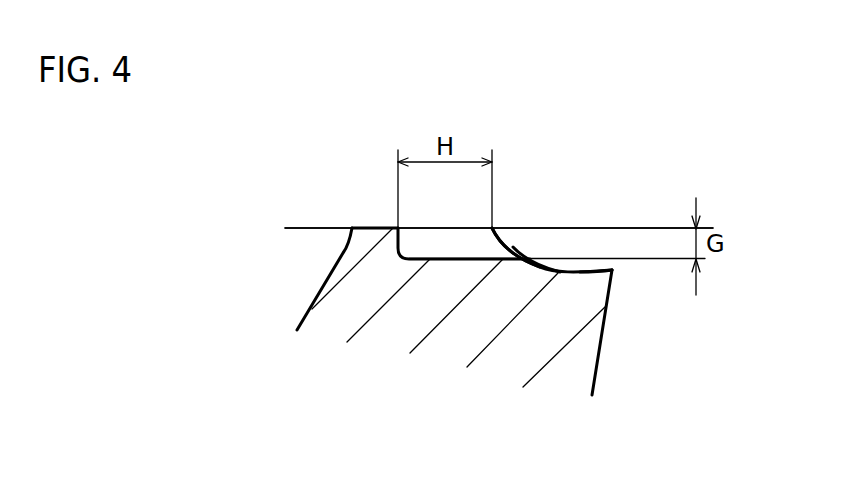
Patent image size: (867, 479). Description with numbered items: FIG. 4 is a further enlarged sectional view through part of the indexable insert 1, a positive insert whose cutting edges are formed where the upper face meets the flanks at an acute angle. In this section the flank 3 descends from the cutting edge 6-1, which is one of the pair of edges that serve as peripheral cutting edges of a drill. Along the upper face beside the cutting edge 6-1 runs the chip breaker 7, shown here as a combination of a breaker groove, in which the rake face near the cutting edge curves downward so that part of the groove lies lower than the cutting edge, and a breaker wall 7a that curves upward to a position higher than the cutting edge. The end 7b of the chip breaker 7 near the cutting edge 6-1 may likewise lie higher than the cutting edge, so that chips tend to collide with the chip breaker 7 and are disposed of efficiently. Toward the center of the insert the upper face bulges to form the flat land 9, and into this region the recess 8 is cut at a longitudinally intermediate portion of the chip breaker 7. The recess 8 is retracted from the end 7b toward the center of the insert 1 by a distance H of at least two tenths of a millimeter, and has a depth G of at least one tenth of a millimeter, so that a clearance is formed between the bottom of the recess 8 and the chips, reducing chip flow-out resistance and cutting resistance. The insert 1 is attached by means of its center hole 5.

The indexable insert 1 is at (383, 186).
The flank 3 is at (602, 350).
The center hole 5 is at (308, 287).
The cutting edge 6-1 is at (614, 271).
The chip breaker 7 is at (668, 178).
The breaker wall 7a is at (513, 247).
The end of the chip breaker 7b is at (492, 228).
The recess 8 is at (492, 228).
The land 9 is at (355, 228).